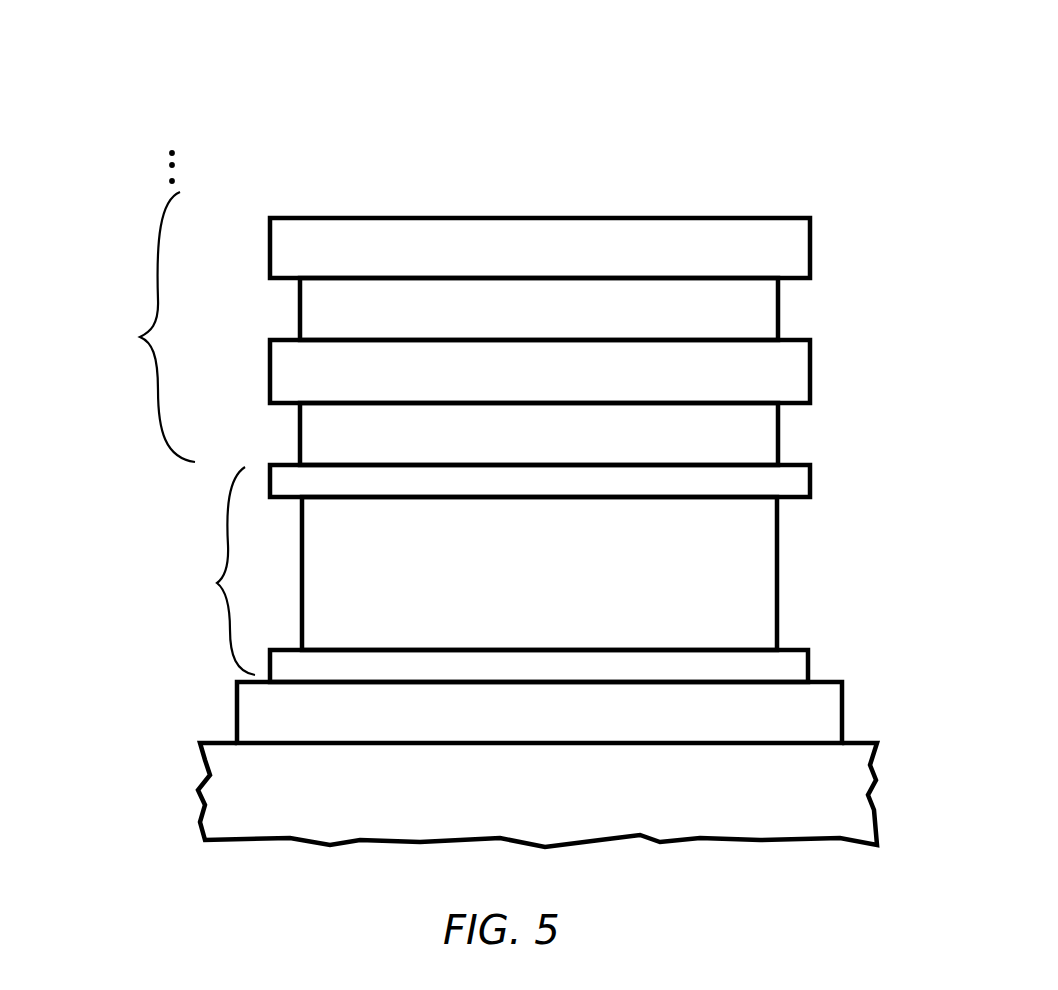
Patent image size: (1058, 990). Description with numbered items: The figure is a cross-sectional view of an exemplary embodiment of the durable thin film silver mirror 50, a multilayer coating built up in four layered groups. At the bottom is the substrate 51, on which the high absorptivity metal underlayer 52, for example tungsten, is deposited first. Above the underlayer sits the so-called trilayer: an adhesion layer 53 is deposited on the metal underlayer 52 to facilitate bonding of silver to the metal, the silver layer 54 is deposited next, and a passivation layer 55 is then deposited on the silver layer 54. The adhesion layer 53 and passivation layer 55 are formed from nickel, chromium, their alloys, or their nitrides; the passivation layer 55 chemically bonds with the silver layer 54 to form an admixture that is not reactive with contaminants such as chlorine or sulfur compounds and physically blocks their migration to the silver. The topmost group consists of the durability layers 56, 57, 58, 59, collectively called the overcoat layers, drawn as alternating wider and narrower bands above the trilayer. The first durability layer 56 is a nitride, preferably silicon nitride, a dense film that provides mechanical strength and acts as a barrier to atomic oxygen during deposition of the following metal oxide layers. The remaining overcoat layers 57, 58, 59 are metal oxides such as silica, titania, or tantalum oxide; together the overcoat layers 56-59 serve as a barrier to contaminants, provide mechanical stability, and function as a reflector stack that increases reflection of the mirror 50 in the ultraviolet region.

The durable thin film silver mirror 50 is at (805, 118).
The substrate 51 is at (548, 807).
The high absorptivity metal underlayer 52 is at (843, 705).
The adhesion layer 53 is at (810, 660).
The silver layer 54 is at (777, 578).
The passivation layer 55 is at (812, 478).
The first durability layer 56 is at (300, 436).
The durability layer 57 is at (270, 366).
The durability layer 58 is at (300, 314).
The durability layer 59 is at (270, 242).